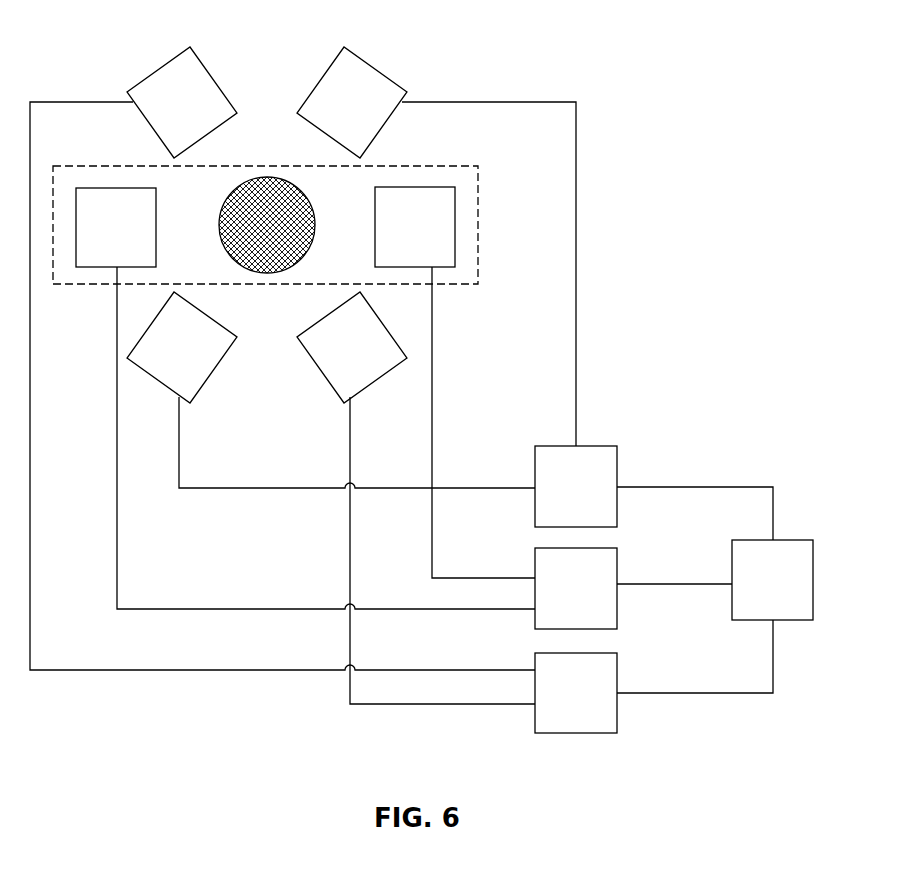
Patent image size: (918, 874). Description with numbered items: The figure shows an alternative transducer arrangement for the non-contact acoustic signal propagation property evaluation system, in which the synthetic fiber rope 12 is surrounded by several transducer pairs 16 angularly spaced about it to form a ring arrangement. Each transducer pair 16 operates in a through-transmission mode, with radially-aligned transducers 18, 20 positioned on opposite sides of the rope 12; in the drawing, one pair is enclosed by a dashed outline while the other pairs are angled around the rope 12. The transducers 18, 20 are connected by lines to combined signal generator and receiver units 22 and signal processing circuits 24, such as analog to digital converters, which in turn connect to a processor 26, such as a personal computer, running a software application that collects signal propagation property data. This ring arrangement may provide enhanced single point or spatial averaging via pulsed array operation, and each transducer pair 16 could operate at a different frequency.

The synthetic fiber rope 12 is at (267, 273).
The transducer pair 16 is at (488, 232).
The transducer 18 is at (155, 68).
The transducer 20 is at (381, 72).
The combined signal generator and receiver unit 22 is at (619, 590).
The signal processing circuit 24 is at (607, 446).
The processor 26 is at (813, 583).